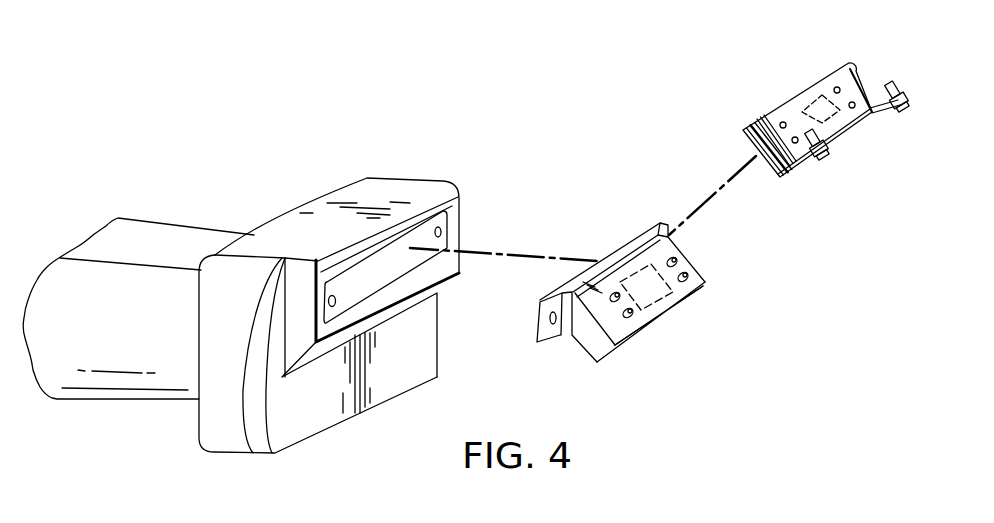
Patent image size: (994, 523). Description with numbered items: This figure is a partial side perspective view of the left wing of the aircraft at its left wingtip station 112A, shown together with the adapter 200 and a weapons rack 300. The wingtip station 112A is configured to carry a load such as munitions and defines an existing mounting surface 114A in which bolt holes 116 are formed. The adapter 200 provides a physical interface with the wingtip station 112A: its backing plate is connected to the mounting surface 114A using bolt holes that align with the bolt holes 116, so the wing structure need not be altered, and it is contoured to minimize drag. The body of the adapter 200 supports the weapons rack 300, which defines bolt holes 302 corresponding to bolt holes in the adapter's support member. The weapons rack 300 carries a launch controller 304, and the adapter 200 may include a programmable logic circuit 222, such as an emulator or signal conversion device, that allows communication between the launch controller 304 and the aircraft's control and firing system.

The left wingtip station 112A is at (474, 194).
The mounting surface 114A is at (358, 286).
The bolt holes 116 is at (334, 296).
The adapter 200 is at (626, 234).
The programmable logic circuit 222 is at (667, 320).
The weapons rack 300 is at (804, 84).
The bolt holes 302 is at (782, 122).
The launch controller 304 is at (813, 118).